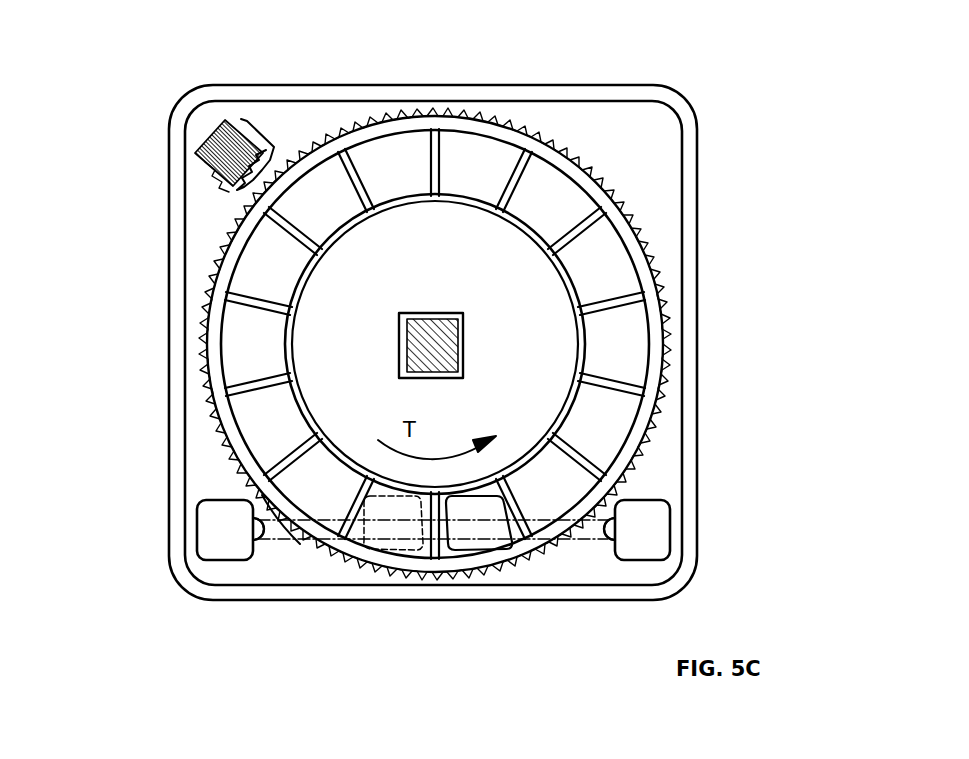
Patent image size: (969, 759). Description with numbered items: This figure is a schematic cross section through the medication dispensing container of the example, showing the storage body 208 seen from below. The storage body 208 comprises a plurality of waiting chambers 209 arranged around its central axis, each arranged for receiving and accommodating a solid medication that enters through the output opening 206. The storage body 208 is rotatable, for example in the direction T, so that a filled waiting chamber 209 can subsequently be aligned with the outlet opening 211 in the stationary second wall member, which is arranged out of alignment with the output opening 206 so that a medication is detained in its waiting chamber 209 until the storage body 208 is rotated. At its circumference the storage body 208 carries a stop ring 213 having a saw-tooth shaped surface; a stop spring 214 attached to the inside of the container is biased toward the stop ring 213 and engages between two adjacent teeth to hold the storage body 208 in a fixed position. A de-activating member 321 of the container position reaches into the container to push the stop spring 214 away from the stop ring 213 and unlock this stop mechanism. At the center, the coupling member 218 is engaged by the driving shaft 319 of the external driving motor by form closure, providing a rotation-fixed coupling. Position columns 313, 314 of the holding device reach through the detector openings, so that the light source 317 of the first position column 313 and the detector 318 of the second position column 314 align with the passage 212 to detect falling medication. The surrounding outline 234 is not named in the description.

The housing frame 234 is at (697, 157).
The stop ring 213 is at (198, 345).
The waiting chambers 209 is at (562, 491).
The storage body 208 is at (543, 335).
The coupling member 218 is at (437, 313).
The driving shaft 319 is at (446, 372).
The output opening 206 is at (407, 543).
The outlet opening 211 is at (463, 543).
The first position column 313 is at (213, 527).
The second position column 314 is at (660, 547).
The light source 317 is at (253, 548).
The detector 318 is at (607, 532).
The passage 212 is at (273, 530).
The stop spring 214 is at (197, 156).
The de-activating member 321 is at (267, 130).